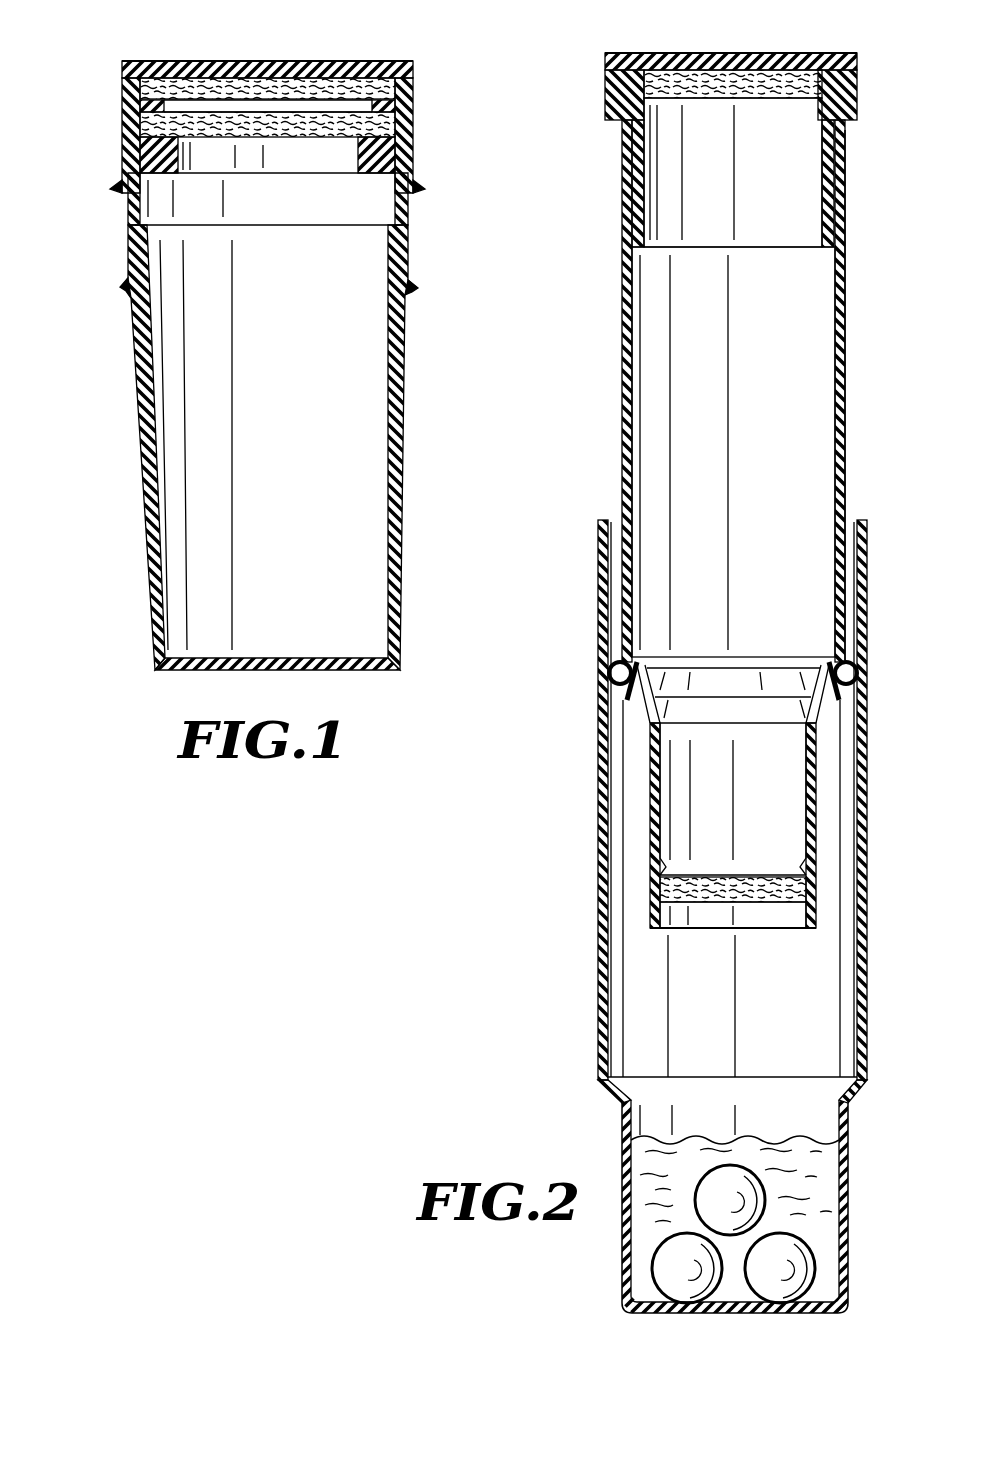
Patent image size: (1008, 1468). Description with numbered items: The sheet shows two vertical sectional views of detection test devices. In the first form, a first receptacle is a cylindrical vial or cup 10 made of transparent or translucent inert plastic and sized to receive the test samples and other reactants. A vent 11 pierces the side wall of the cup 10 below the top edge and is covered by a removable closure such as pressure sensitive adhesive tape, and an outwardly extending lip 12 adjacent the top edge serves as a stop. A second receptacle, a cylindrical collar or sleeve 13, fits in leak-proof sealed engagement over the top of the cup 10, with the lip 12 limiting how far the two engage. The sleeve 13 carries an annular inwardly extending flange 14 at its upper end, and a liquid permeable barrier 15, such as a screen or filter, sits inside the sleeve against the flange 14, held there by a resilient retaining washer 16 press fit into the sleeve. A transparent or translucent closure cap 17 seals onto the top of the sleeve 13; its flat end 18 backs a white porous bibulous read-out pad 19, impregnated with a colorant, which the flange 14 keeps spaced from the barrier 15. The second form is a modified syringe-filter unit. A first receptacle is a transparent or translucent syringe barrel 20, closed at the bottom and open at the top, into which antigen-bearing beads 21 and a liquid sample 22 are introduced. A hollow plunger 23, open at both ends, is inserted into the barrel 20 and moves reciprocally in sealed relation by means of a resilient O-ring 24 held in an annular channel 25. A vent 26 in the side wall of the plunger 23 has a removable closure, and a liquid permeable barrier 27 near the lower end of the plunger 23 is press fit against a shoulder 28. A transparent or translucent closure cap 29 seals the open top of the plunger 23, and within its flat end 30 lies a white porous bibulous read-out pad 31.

In FIG. 1, the cup 10 is at (154, 556).
In FIG. 1, the vent 11 is at (395, 384).
In FIG. 1, the lip 12 is at (416, 293).
In FIG. 1, the sleeve 13 is at (128, 236).
In FIG. 1, the flange 14 is at (376, 103).
In FIG. 1, the liquid permeable barrier 15 is at (404, 119).
In FIG. 1, the retaining washer 16 is at (393, 164).
In FIG. 1, the closure cap 17 is at (124, 118).
In FIG. 1, the end 18 is at (214, 62).
In FIG. 1, the read-out pad 19 is at (307, 80).
In FIG. 2, the barrel 20 is at (600, 961).
In FIG. 2, the beads 21 is at (795, 1272).
In FIG. 2, the liquid sample 22 is at (830, 1178).
In FIG. 2, the plunger 23 is at (622, 400).
In FIG. 2, the O-ring 24 is at (850, 667).
In FIG. 2, the channel 25 is at (627, 697).
In FIG. 2, the vent 26 is at (840, 318).
In FIG. 2, the liquid permeable barrier 27 is at (787, 915).
In FIG. 2, the shoulder 28 is at (668, 873).
In FIG. 2, the closure cap 29 is at (606, 78).
In FIG. 2, the end 30 is at (781, 55).
In FIG. 2, the read-out pad 31 is at (690, 75).